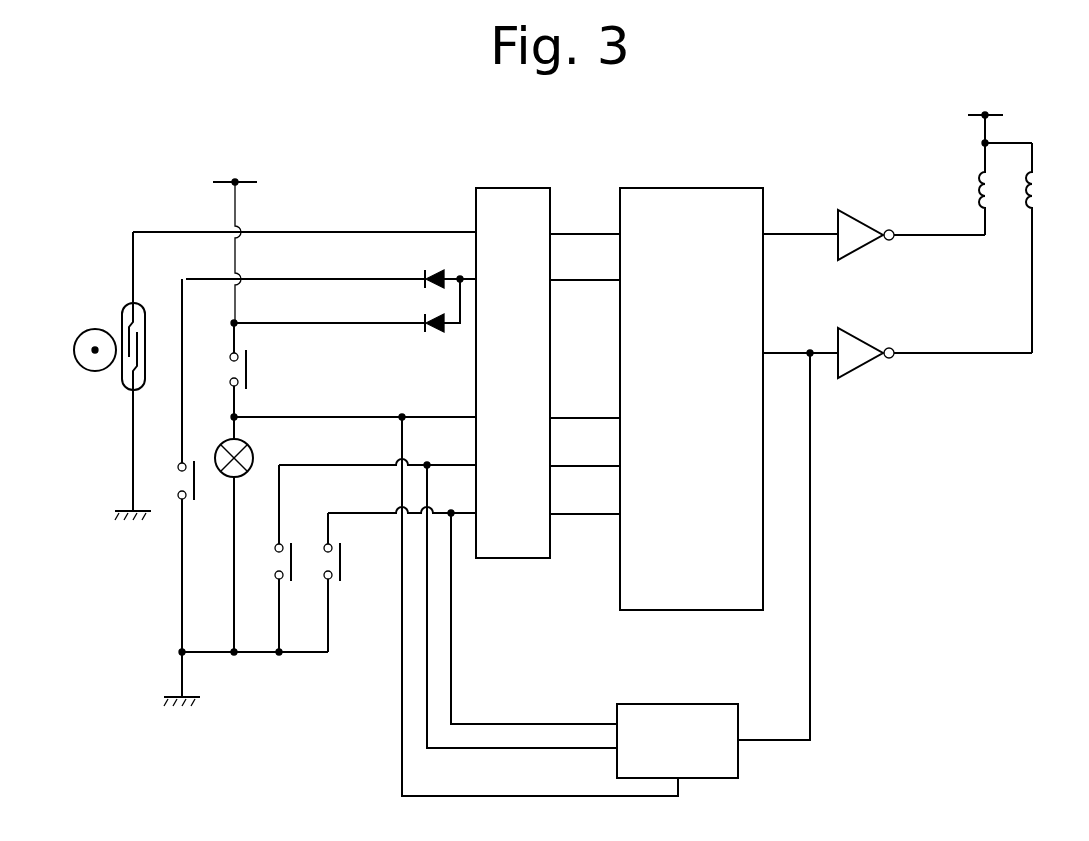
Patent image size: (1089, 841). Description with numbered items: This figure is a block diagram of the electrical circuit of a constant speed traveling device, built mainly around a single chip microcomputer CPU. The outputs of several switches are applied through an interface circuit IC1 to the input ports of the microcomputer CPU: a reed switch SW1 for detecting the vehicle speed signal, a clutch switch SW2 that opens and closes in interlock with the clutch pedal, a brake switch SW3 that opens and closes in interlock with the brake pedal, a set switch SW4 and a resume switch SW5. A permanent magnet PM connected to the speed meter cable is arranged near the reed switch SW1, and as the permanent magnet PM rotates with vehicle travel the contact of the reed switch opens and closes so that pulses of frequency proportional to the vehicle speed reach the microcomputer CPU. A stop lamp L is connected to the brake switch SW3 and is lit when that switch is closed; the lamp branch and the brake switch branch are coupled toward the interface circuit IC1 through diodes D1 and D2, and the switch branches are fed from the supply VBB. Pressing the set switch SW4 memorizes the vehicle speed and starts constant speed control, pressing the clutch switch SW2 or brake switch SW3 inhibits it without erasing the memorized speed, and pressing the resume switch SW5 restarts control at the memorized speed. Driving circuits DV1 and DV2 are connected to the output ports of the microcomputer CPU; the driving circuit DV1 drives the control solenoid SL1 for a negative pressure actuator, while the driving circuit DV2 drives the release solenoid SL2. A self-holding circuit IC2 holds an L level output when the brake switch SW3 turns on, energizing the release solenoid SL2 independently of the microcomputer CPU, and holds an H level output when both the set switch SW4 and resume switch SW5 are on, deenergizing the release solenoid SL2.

The reed switch SW1 is at (122, 308).
The permanent magnet PM is at (82, 368).
The clutch switch SW2 is at (154, 531).
The brake switch SW3 is at (320, 354).
The set switch SW4 is at (145, 610).
The resume switch SW5 is at (340, 666).
The stop lamp L is at (239, 536).
The diode D1 is at (448, 270).
The diode D2 is at (437, 305).
The interface circuit IC1 is at (504, 186).
The single chip microcomputer CPU is at (687, 188).
The self-holding circuit IC2 is at (662, 704).
The driving circuit DV1 is at (907, 224).
The driving circuit DV2 is at (935, 342).
The control solenoid SL1 is at (957, 189).
The release solenoid SL2 is at (1049, 248).
The power supply VBB is at (228, 240).